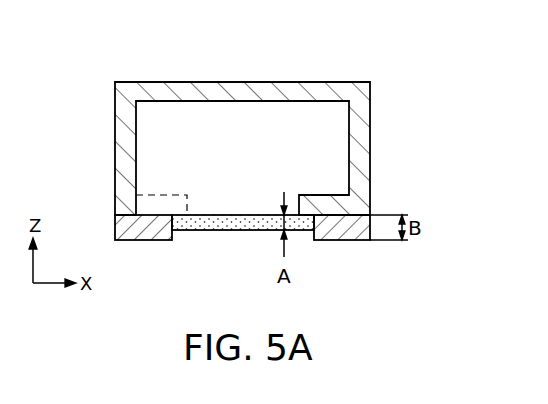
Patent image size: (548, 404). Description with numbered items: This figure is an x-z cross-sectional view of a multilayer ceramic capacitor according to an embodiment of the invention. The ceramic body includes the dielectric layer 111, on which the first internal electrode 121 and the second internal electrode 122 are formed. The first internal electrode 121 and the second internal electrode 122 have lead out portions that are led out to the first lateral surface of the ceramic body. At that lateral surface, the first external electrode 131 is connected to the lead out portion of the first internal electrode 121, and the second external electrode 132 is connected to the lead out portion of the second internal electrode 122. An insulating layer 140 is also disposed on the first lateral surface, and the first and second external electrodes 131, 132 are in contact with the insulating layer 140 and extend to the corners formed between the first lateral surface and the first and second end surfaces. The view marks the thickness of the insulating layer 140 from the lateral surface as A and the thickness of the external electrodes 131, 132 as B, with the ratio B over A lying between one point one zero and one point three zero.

The dielectric layer 111 is at (300, 85).
The first internal electrode 121 is at (338, 140).
The second internal electrode 122 is at (160, 136).
The first external electrode 131 is at (140, 230).
The second external electrode 132 is at (343, 228).
The insulating layer 140 is at (246, 227).